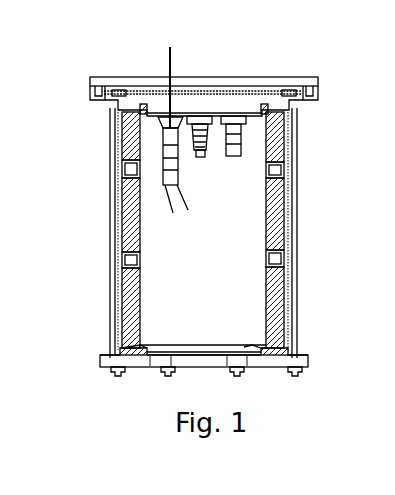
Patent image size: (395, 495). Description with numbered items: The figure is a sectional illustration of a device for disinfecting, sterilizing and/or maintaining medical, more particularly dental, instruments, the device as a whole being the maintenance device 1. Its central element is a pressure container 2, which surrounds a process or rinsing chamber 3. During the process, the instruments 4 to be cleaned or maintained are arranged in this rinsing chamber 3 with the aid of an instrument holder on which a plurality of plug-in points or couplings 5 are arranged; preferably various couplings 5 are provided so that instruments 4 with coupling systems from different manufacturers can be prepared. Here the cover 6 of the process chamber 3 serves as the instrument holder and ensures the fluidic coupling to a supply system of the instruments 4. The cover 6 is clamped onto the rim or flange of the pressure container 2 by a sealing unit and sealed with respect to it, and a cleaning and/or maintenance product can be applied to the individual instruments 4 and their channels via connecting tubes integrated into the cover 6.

The maintenance device 1 is at (88, 245).
The pressure container 2 is at (110, 206).
The process chamber 3 is at (211, 307).
The instruments 4 is at (122, 160).
The couplings 5 is at (242, 139).
The cover 6 is at (223, 77).